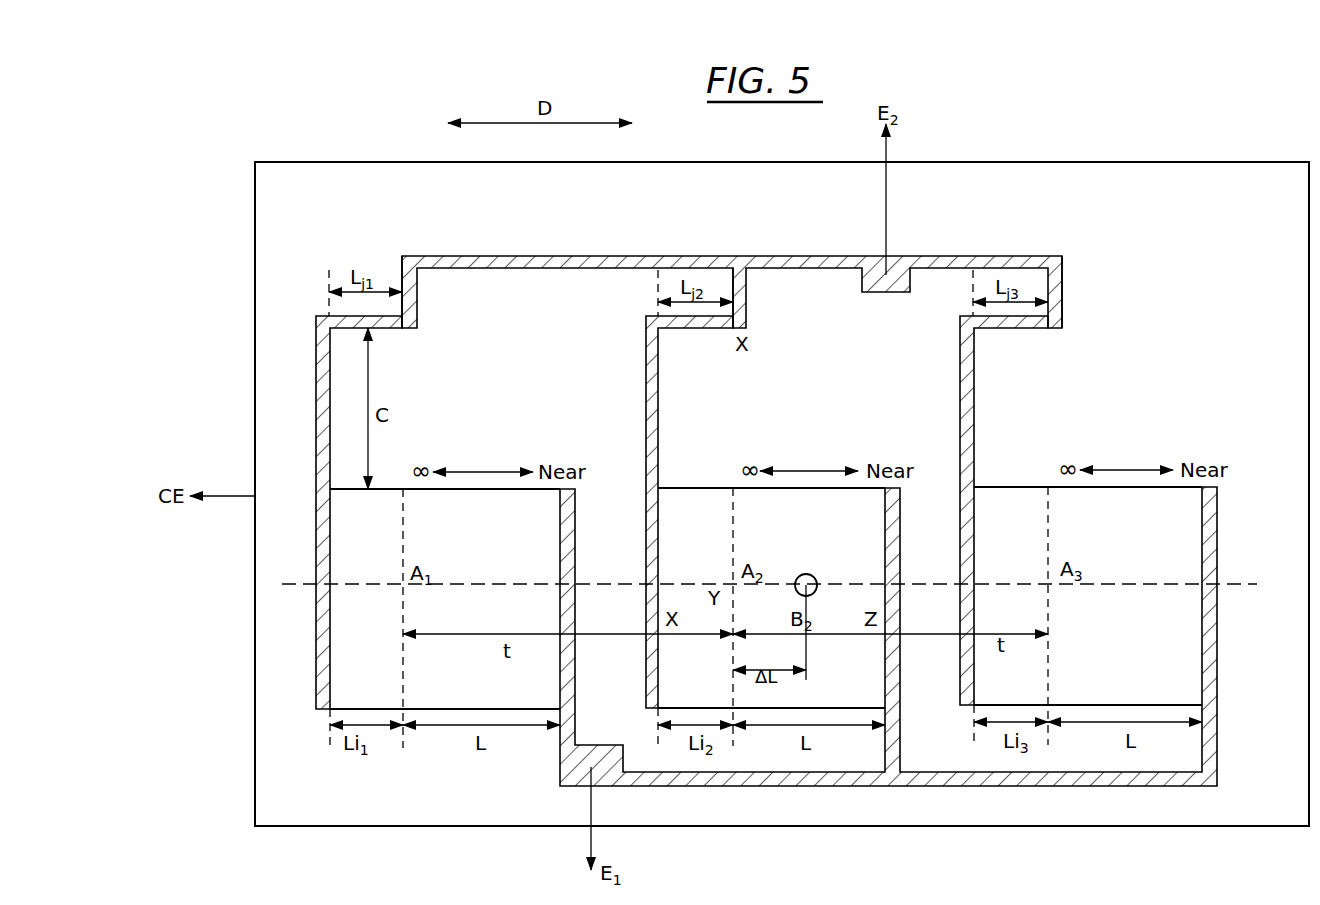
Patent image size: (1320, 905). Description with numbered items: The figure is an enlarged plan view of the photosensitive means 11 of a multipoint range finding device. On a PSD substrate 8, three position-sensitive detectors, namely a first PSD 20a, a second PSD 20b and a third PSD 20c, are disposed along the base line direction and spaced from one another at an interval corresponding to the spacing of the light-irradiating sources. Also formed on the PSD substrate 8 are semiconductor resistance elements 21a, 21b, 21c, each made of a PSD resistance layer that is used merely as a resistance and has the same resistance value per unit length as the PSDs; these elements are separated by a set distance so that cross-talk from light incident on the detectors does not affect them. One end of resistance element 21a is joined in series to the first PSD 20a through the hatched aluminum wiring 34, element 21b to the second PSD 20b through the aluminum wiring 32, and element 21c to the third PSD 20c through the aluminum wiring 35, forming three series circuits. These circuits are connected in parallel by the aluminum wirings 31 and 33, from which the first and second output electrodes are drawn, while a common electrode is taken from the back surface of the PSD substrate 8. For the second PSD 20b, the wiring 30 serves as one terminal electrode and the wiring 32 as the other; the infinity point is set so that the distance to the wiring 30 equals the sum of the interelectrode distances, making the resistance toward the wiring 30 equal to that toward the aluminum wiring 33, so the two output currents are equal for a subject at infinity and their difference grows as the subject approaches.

The PSD substrate 8 is at (1123, 167).
The photosensitive means 11 is at (1013, 110).
The first PSD 20a is at (337, 665).
The second PSD 20b is at (878, 548).
The third PSD 20c is at (1205, 532).
The semiconductor resistance element 21a is at (413, 330).
The semiconductor resistance element 21b is at (682, 330).
The semiconductor resistance element 21c is at (1027, 330).
The wiring 30 is at (769, 604).
The aluminum wiring 31 is at (877, 787).
The aluminum wiring 32 is at (648, 537).
The aluminum wiring 33 is at (776, 256).
The aluminum wiring 34 is at (318, 448).
The aluminum wiring 35 is at (975, 438).